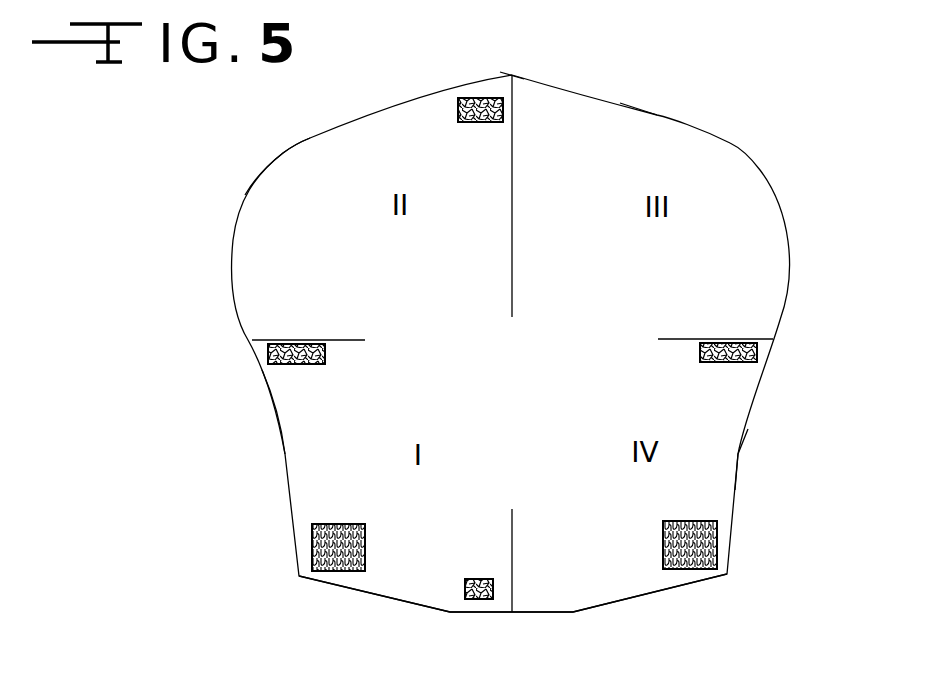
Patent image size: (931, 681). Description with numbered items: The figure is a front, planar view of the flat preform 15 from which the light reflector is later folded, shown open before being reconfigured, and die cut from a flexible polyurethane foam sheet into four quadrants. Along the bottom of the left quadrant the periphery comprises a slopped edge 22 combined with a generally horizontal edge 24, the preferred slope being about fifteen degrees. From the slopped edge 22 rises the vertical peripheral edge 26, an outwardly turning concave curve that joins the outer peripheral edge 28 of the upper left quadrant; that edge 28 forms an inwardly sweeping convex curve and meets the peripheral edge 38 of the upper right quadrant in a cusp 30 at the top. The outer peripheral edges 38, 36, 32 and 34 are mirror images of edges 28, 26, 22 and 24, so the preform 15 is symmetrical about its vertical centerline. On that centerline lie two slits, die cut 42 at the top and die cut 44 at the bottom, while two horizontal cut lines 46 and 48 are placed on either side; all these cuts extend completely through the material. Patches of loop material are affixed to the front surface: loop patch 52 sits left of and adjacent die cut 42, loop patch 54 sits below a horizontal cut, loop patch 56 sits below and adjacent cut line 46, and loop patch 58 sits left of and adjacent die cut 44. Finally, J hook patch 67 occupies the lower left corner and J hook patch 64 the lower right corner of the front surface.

The preform 15 is at (728, 145).
The slopped edge 22 is at (375, 592).
The horizontal edge 24 is at (497, 614).
The vertical peripheral edge 26 is at (277, 424).
The outer peripheral edge 28 is at (283, 153).
The cusp 30 is at (512, 75).
The slopped edge 32 is at (640, 599).
The horizontal edge 34 is at (527, 614).
The vertical peripheral edge 36 is at (748, 429).
The peripheral edge 38 is at (655, 113).
The die cut 42 is at (510, 276).
The die cut 44 is at (513, 534).
The horizontal cut line 46 is at (340, 339).
The horizontal cut line 48 is at (675, 339).
The loop patch 52 is at (455, 113).
The loop patch 54 is at (285, 363).
The loop patch 56 is at (725, 363).
The loop patch 58 is at (473, 600).
The J hook patch 64 is at (715, 537).
The J hook patch 67 is at (313, 527).